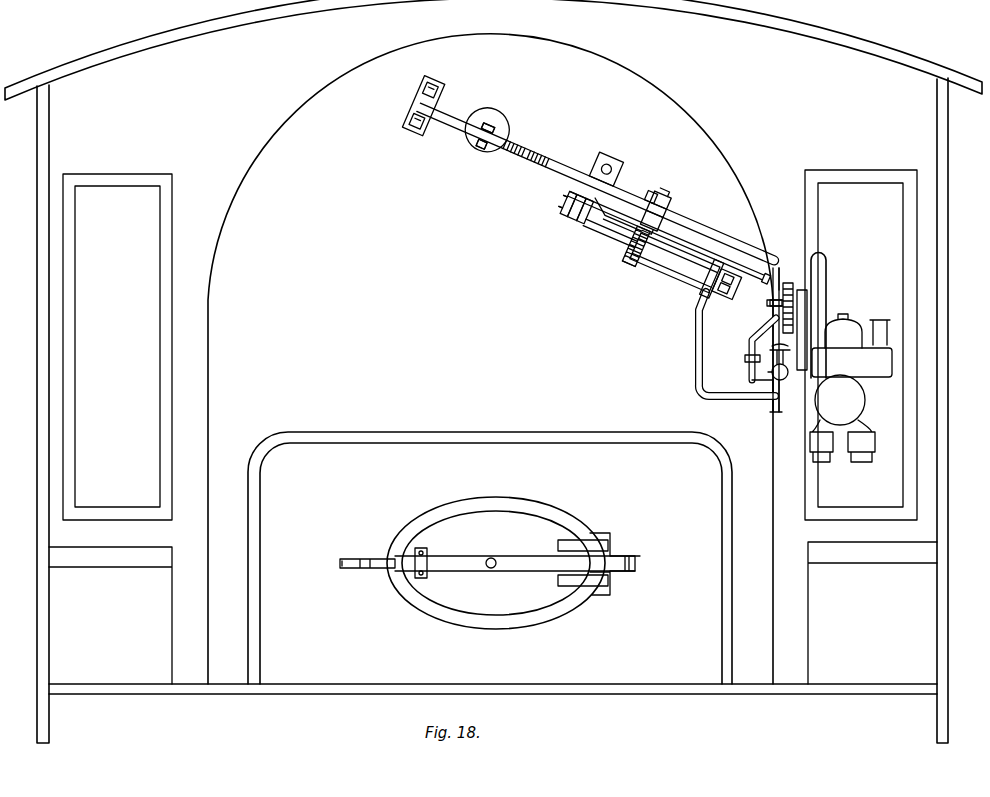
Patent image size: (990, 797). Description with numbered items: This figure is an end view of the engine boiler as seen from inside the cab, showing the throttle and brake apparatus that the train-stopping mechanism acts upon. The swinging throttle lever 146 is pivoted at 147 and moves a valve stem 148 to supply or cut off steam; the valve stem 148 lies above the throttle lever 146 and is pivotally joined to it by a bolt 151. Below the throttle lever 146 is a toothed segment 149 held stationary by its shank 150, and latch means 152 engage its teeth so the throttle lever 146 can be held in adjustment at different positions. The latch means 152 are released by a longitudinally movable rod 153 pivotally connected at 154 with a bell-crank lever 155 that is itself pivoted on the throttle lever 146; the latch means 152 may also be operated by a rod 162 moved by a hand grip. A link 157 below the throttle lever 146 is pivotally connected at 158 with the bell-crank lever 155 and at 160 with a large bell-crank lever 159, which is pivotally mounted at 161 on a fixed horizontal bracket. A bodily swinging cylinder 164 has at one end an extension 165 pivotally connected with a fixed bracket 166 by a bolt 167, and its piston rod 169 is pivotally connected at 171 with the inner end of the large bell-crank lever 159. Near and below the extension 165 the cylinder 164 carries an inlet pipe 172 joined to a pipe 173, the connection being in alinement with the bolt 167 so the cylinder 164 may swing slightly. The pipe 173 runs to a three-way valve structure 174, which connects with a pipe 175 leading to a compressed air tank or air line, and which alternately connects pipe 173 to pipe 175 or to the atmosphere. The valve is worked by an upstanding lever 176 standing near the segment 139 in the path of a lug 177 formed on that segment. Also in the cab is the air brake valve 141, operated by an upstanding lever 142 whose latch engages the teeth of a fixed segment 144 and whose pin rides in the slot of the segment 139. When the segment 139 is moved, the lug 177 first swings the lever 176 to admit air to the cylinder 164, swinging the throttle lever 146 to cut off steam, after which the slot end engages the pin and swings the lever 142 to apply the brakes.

The segment 139 is at (795, 301).
The air brake valve 141 is at (851, 388).
The upstanding lever 142 is at (822, 268).
The fixed segment 144 is at (806, 320).
The throttle lever 146 is at (531, 150).
The pivot 147 is at (414, 107).
The valve stem 148 is at (491, 123).
The segment 149 is at (541, 172).
The shank 150 is at (499, 160).
The bolt 151 is at (477, 150).
The latch means 152 is at (556, 206).
The longitudinally movable rod 153 is at (620, 178).
The pivotal connection 154 is at (654, 191).
The bell-crank lever 155 is at (673, 212).
The link 157 is at (657, 236).
The pivotal connection 158 is at (692, 224).
The large bell-crank lever 159 is at (626, 240).
The pivotal connection 160 is at (600, 236).
The pivotal mounting 161 is at (592, 226).
The rod 162 is at (562, 216).
The bodily swinging cylinder 164 is at (691, 281).
The extension 165 is at (769, 240).
The fixed bracket 166 is at (728, 276).
The bolt 167 is at (729, 262).
The piston rod 169 is at (627, 263).
The pivotal connection 171 is at (574, 213).
The inlet pipe 172 is at (768, 305).
The pipe 173 is at (697, 331).
The three-way valve structure 174 is at (771, 376).
The pipe 175 is at (771, 410).
The upstanding lever 176 is at (762, 320).
The lug 177 is at (777, 290).